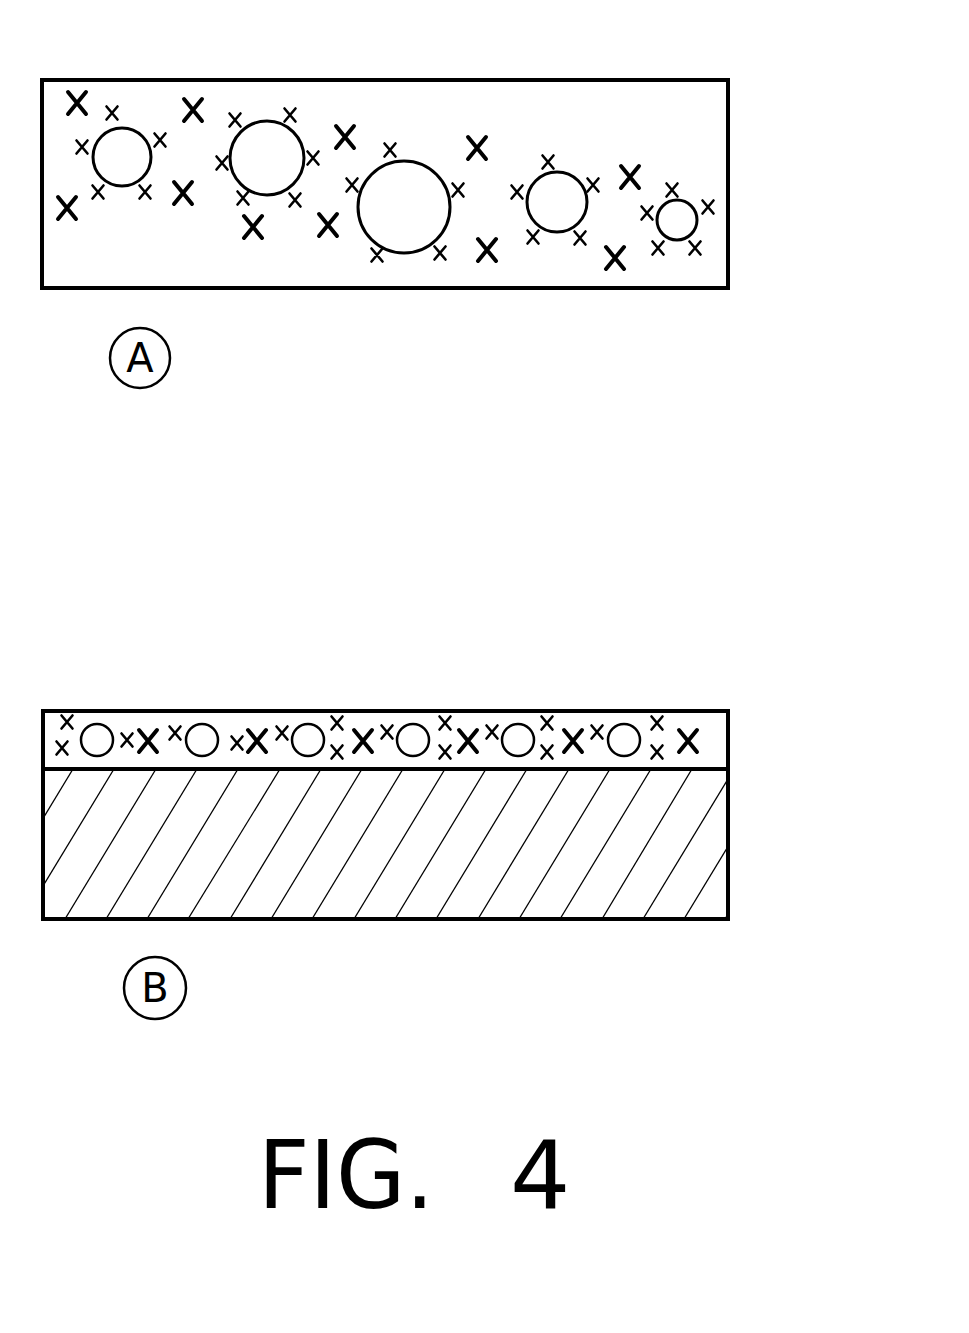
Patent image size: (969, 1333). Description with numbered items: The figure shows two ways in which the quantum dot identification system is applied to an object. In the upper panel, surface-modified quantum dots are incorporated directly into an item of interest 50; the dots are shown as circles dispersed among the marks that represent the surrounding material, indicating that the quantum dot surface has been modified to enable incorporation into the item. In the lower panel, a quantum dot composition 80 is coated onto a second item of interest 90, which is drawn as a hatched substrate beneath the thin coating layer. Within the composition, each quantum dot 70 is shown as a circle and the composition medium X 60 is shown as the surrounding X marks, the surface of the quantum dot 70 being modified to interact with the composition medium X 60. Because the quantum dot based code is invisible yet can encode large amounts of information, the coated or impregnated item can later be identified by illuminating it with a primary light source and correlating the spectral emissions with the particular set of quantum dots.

The item of interest 50 is at (238, 291).
The composition medium X 60 is at (625, 154).
The quantum dot 70 is at (687, 198).
The quantum dot composition 80 is at (730, 738).
The item of interest 90 is at (603, 929).